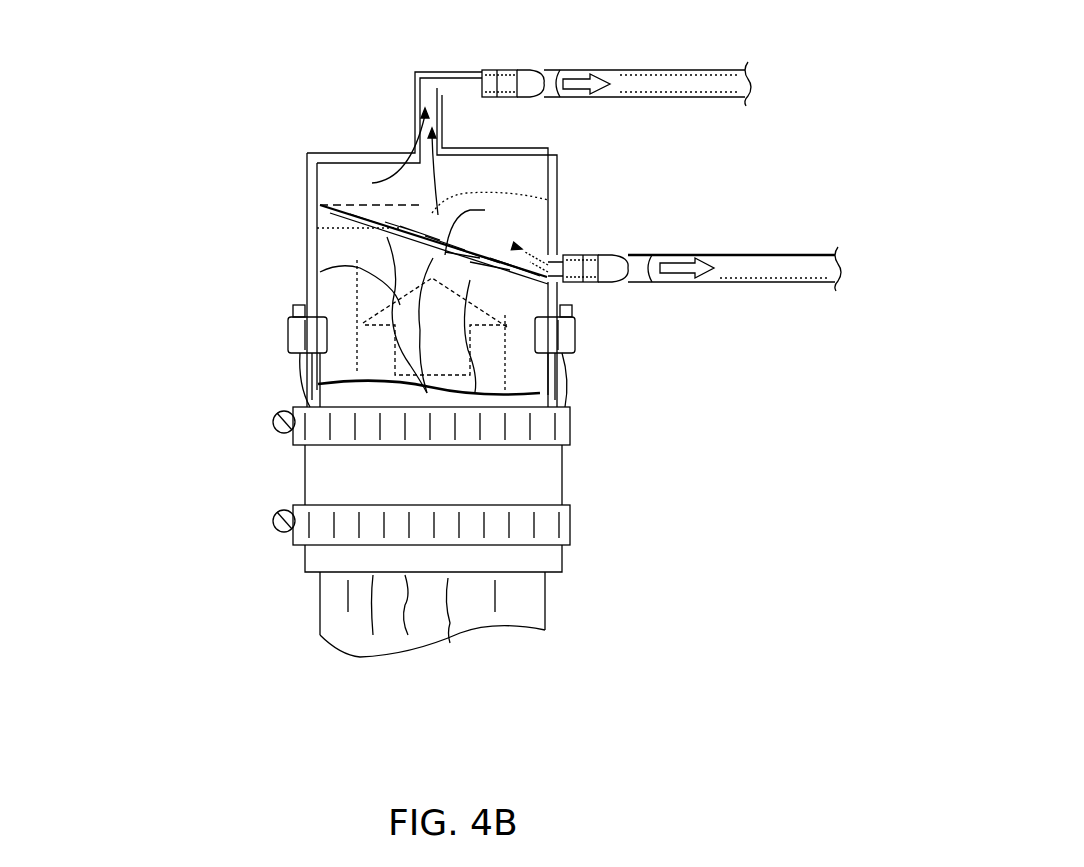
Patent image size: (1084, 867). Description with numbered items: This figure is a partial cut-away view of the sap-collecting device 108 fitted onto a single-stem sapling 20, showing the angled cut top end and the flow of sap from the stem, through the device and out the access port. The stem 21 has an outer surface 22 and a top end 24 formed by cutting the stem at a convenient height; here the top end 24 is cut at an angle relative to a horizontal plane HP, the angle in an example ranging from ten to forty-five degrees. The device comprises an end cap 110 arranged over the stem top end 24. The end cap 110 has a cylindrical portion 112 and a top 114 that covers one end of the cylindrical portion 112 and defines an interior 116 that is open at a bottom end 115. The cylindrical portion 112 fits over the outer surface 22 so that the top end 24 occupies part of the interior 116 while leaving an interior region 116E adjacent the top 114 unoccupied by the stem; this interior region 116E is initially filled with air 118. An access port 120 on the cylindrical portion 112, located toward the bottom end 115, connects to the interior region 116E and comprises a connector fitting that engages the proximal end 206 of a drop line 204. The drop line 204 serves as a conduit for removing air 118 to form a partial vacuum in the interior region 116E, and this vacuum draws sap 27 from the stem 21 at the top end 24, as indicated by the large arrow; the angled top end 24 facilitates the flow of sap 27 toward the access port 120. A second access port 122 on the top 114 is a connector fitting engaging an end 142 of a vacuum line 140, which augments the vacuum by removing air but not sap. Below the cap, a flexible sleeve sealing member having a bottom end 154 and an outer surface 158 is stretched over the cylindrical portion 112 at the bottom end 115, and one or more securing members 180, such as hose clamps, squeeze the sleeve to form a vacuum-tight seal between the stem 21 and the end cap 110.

The sapling 20 is at (303, 608).
The stem 21 is at (547, 590).
The outer surface 22 is at (540, 607).
The top end 24 is at (347, 205).
The sap 27 is at (320, 272).
The sap-collecting device 108 is at (258, 112).
The end cap 110 is at (192, 218).
The cylindrical portion 112 is at (307, 253).
The top 114 is at (556, 132).
The bottom end 115 is at (303, 393).
The interior 116 is at (502, 130).
The interior region 116E is at (335, 183).
The air 118 is at (358, 205).
The access port 120 is at (565, 256).
The second access port 122 is at (490, 70).
The vacuum line 140 is at (658, 70).
The end 142 is at (556, 133).
The bottom end 154 is at (312, 575).
The outer surface 158 is at (543, 470).
The securing member 180 is at (575, 345).
The drop line 204 is at (740, 255).
The proximal end 206 is at (600, 282).
The horizontal plane HP is at (336, 207).